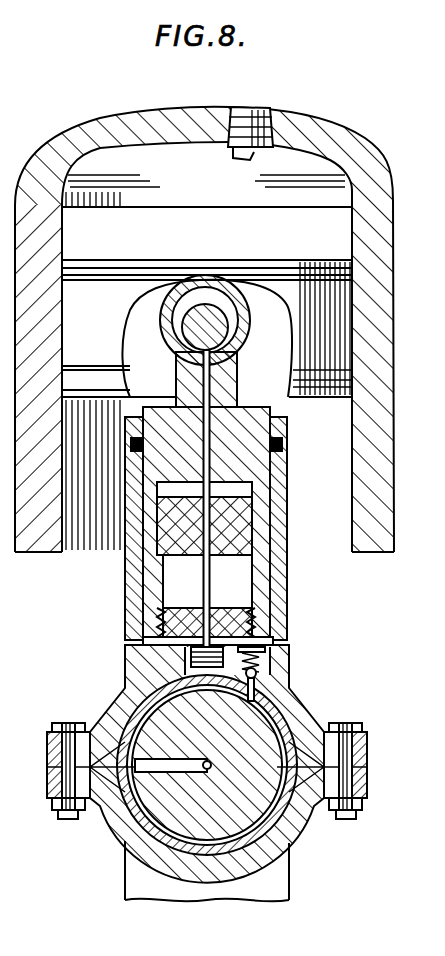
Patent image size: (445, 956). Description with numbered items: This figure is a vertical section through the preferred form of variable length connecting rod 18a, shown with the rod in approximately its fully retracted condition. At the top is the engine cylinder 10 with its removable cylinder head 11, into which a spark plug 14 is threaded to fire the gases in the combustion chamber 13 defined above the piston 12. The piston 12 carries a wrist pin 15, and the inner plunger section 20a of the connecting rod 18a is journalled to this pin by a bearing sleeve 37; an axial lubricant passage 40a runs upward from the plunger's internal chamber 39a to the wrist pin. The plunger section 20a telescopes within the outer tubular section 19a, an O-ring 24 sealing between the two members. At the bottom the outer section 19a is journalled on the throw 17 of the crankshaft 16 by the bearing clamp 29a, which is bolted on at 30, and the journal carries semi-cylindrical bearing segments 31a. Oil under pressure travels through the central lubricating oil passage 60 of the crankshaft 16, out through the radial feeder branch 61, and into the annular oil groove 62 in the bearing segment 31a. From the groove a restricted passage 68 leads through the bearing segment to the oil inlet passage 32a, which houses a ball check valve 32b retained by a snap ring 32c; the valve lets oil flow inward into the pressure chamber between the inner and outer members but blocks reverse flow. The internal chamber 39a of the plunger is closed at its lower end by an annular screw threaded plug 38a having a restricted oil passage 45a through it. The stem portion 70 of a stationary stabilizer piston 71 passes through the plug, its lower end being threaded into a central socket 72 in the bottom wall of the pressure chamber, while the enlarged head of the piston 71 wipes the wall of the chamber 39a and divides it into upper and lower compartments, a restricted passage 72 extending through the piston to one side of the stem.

The cylinder 10 is at (375, 546).
The cylinder head 11 is at (362, 124).
The piston 12 is at (102, 263).
The combustion chamber 13 is at (242, 199).
The spark plug 14 is at (243, 117).
The wrist pin 15 is at (212, 325).
The crankshaft 16 is at (272, 884).
The throw 17 is at (253, 743).
The variable length connecting rod 18a is at (302, 613).
The outer tubular section 19a is at (126, 477).
The inner plunger section 20a is at (250, 407).
The O-ring 24 is at (280, 445).
The bearing clamp 29a is at (288, 832).
The bolt 30 is at (62, 767).
The bearing segment 31a is at (147, 707).
The oil inlet passage 32a is at (262, 662).
The ball check valve 32b is at (262, 675).
The snap ring 32c is at (264, 651).
The bearing sleeve 37 is at (240, 346).
The screw threaded plug 38a is at (170, 623).
The internal chamber 39a is at (238, 575).
The axial lubricant passage 40a is at (207, 377).
The restricted oil passage 45a is at (205, 617).
The lubricating oil passage 60 is at (208, 770).
The radial feeder branch 61 is at (158, 768).
The oil groove 62 is at (137, 818).
The restricted passage 68 is at (258, 693).
The stem portion 70 is at (205, 568).
The stabilizer piston 71 is at (242, 533).
The central socket 72 is at (207, 525).